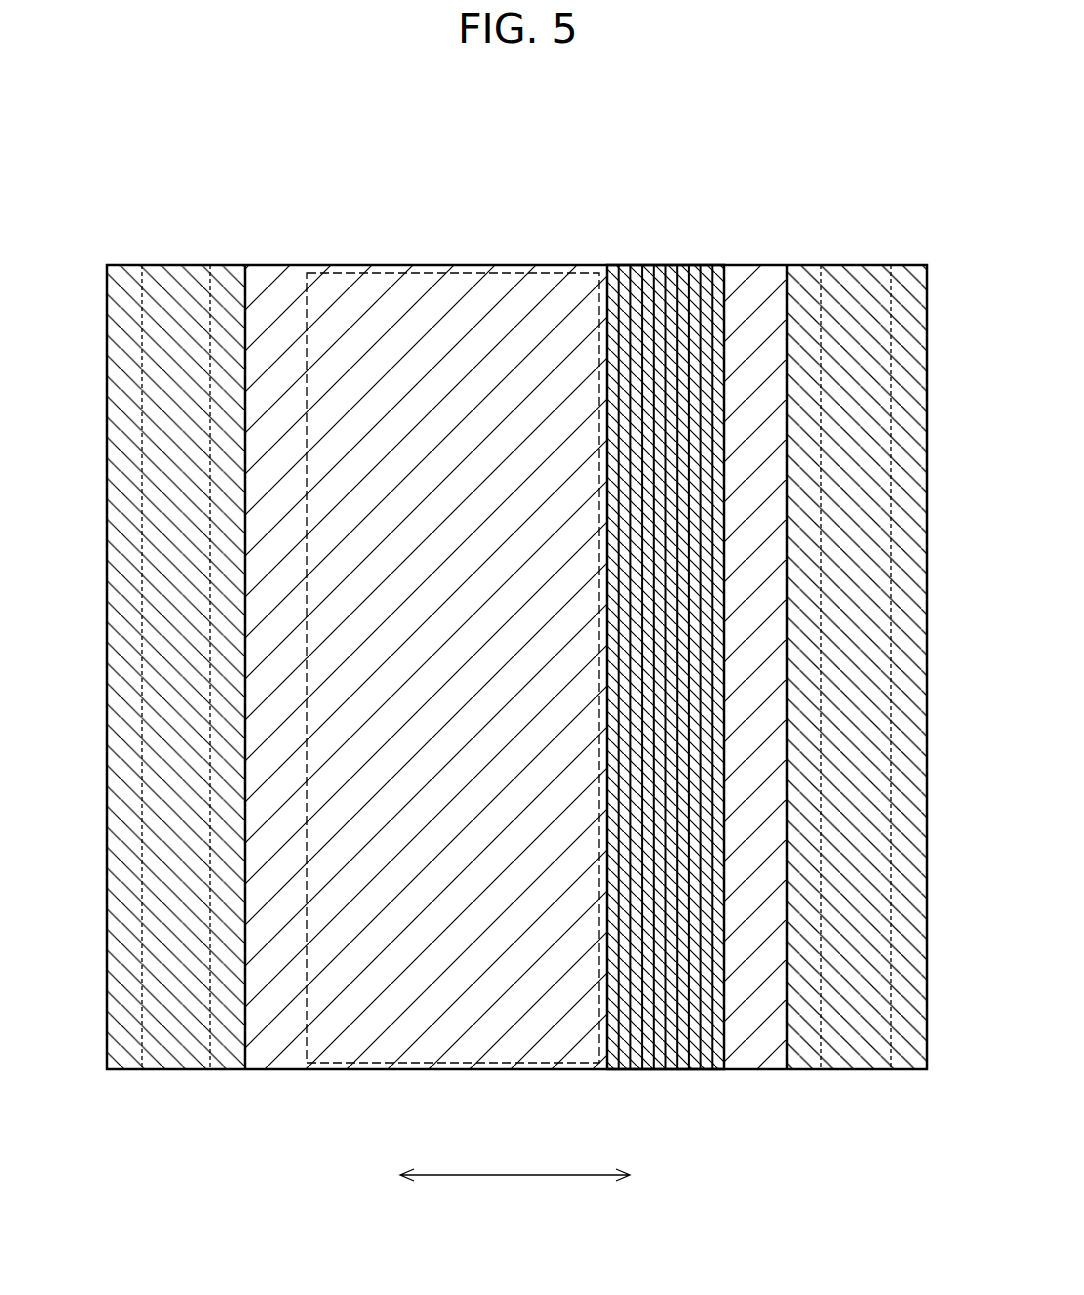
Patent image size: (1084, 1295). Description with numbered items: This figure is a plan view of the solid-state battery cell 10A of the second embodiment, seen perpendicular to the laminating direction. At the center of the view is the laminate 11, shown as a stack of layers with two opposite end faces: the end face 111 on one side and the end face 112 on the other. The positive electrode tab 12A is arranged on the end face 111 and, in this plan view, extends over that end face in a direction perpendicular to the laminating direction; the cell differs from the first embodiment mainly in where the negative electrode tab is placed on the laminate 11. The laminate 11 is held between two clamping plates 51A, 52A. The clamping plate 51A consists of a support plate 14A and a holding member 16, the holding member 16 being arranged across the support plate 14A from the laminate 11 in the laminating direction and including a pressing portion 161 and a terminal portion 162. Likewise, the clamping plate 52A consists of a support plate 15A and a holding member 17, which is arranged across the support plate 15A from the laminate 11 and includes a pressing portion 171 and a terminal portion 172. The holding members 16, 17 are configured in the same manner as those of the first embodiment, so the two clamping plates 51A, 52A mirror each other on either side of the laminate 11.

The solid-state battery cell 10A is at (890, 136).
The laminate 11 is at (686, 1089).
The end face 111 is at (658, 272).
The end face 112 is at (620, 1066).
The positive electrode tab 12A is at (385, 1062).
The support plate 14A is at (470, 1060).
The support plate 15A is at (757, 1062).
The holding member 16 is at (96, 329).
The pressing portion 161 is at (225, 283).
The terminal portion 162 is at (158, 283).
The holding member 17 is at (936, 327).
The pressing portion 171 is at (803, 283).
The terminal portion 172 is at (868, 283).
The clamping plate 51A is at (252, 245).
The clamping plate 52A is at (800, 1086).